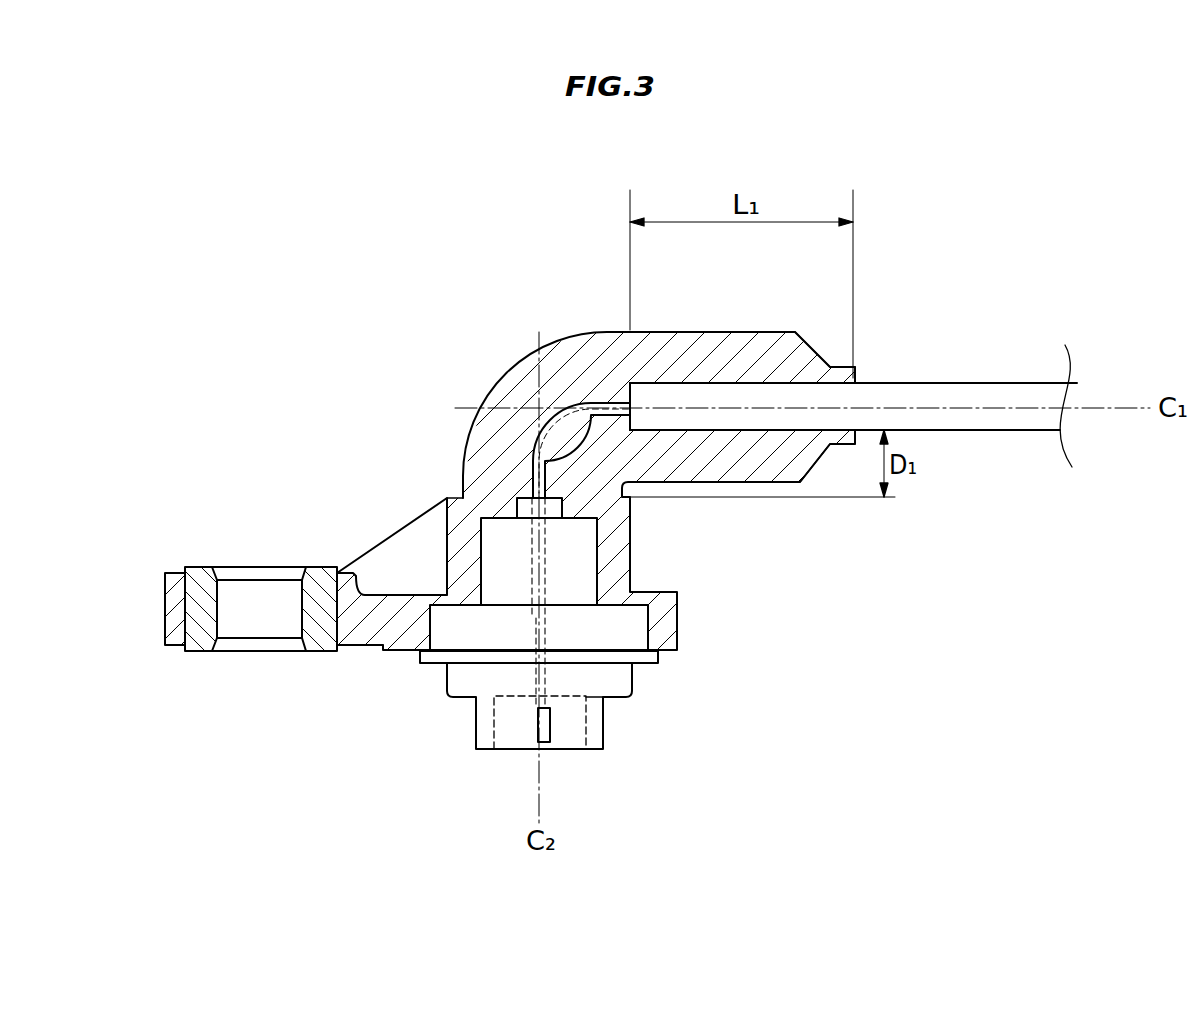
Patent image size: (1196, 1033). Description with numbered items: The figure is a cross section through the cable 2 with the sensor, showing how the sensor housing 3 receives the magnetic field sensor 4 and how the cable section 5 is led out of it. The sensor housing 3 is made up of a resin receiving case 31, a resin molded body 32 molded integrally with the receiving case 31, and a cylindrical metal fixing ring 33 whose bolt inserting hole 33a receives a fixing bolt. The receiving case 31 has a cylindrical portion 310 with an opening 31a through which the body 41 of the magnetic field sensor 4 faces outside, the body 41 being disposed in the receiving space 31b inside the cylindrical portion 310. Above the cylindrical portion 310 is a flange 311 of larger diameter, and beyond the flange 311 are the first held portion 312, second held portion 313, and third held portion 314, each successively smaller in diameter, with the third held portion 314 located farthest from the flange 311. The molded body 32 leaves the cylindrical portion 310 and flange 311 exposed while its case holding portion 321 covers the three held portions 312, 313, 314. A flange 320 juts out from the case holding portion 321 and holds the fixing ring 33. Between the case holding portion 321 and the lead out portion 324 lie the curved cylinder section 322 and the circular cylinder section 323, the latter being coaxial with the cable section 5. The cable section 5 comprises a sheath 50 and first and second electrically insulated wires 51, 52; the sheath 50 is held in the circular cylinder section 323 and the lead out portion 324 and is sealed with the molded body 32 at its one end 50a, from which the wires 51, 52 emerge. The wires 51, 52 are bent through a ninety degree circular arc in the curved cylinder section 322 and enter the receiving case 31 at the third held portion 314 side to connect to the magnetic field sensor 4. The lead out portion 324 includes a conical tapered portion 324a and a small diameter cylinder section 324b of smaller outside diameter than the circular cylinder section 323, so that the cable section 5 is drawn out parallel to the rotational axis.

The cable with the sensor 2 is at (334, 265).
The sensor housing 3 is at (417, 314).
The receiving case 31 is at (548, 665).
The cylindrical portion 310 is at (594, 708).
The flange 311 is at (647, 658).
The opening 31a is at (572, 771).
The receiving space 31b is at (512, 734).
The first held portion 312 is at (610, 613).
The second held portion 313 is at (585, 548).
The third held portion 314 is at (522, 512).
The molded body 32 is at (480, 374).
The flange 320 is at (380, 568).
The case holding portion 321 is at (443, 521).
The curved cylinder section 322 is at (530, 362).
The circular cylinder section 323 is at (758, 333).
The lead out portion 324 is at (818, 460).
The tapered portion 324a is at (808, 347).
The small diameter cylinder section 324b is at (857, 380).
The fixing ring 33 is at (200, 583).
The bolt inserting hole 33a is at (220, 598).
The magnetic field sensor 4 is at (528, 764).
The body 41 is at (543, 750).
The cable section 5 is at (1023, 352).
The sheath 50 is at (715, 380).
The one end of the sheath 50a is at (627, 364).
The first electrically insulated wire 51 is at (582, 408).
The second electrically insulated wire 52 is at (540, 381).